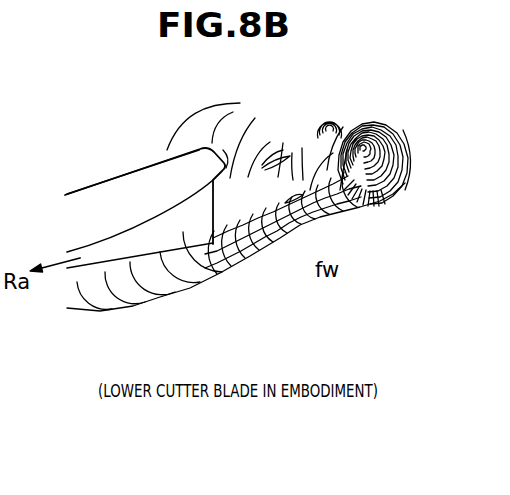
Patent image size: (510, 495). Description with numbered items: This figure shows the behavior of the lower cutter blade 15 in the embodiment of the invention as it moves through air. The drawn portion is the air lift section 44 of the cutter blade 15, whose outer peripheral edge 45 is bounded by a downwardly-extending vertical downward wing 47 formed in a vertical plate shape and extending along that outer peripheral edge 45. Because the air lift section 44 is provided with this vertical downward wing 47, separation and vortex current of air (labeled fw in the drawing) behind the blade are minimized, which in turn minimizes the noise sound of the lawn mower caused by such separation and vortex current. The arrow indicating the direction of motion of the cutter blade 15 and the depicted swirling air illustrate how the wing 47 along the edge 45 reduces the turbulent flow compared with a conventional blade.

The cutter blade 15 is at (121, 174).
The air lift section 44 is at (163, 185).
The outer peripheral edge 45 is at (163, 218).
The vertical downward wing 47 is at (123, 250).